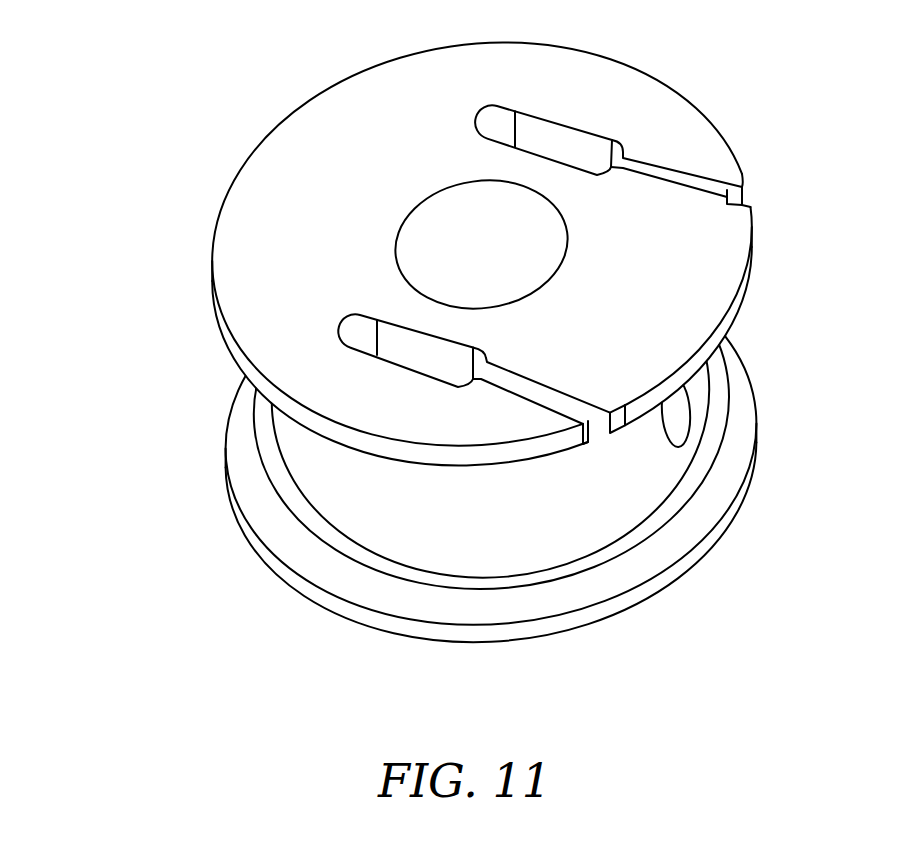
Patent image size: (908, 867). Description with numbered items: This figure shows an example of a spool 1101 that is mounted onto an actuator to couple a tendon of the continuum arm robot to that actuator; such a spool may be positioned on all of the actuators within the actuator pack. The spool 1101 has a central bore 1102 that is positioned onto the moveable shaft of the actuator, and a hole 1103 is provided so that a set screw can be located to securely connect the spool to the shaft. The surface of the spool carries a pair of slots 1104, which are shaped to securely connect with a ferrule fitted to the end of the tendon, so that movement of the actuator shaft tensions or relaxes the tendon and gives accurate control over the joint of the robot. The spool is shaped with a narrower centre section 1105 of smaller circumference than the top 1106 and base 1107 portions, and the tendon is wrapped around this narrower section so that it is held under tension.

The spool 1101 is at (257, 105).
The central bore 1102 is at (497, 242).
The hole 1103 is at (676, 408).
The slots 1104 is at (575, 143).
The centre section 1105 is at (367, 489).
The top portion 1106 is at (297, 219).
The base portion 1107 is at (298, 553).